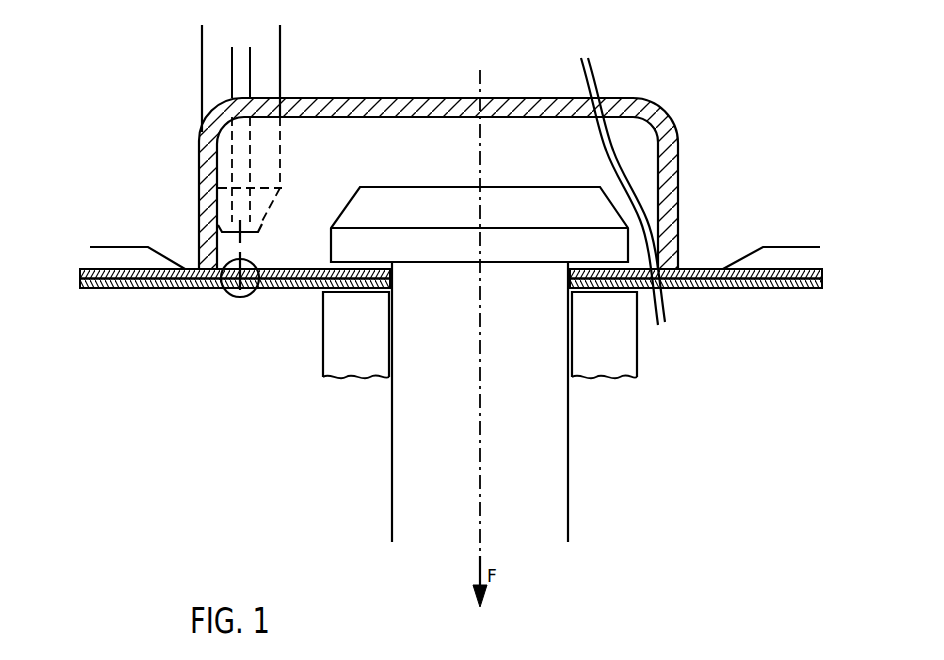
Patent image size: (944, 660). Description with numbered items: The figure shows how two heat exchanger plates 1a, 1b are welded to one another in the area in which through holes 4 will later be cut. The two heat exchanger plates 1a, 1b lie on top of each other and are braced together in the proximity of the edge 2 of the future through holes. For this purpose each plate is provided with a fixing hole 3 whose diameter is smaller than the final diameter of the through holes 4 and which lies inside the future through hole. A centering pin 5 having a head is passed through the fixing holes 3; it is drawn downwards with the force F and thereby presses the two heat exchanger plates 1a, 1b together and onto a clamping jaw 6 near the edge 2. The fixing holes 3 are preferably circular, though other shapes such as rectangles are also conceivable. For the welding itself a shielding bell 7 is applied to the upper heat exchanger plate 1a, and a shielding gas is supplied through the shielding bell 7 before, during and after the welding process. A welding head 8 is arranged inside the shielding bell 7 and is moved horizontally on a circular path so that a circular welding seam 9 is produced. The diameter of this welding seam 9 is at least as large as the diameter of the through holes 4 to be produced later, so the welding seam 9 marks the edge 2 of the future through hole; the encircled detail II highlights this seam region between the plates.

The heat exchanger plate 1a is at (88, 270).
The heat exchanger plate 1b is at (97, 288).
The edge of the future through holes 2 is at (432, 303).
The fixing hole 3 is at (567, 278).
The through holes 4 is at (438, 147).
The centering pin 5 is at (413, 518).
The clamping jaw 6 is at (325, 355).
The shielding bell 7 is at (543, 98).
The welding head 8 is at (274, 60).
The welding seam 9 is at (230, 294).
The detail region II is at (237, 298).